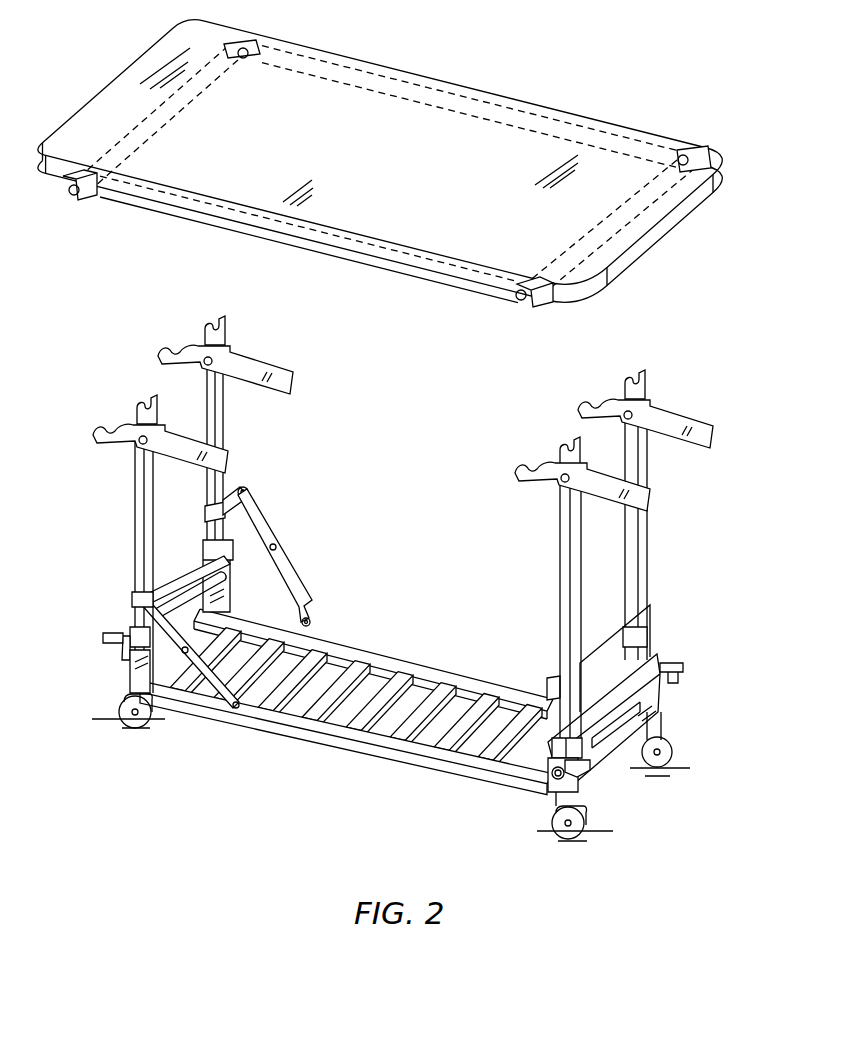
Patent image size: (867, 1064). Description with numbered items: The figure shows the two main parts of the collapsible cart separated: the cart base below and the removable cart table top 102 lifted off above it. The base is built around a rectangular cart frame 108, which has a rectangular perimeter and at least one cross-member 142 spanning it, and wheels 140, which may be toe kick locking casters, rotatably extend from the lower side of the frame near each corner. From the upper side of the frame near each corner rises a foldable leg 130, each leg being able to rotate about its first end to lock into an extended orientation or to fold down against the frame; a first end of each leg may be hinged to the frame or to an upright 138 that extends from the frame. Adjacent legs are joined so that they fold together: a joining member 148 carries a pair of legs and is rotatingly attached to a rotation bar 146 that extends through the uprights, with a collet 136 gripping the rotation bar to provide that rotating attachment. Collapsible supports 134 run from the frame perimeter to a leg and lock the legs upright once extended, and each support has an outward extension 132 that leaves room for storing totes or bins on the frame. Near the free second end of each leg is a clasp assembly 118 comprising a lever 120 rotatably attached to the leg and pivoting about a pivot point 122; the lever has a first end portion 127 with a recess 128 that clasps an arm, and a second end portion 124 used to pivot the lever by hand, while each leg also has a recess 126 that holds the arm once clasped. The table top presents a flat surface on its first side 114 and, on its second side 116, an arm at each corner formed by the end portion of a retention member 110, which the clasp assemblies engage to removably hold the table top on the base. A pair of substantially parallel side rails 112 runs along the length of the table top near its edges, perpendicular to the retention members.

The cart table top 102 is at (120, 118).
The rectangular cart frame 108 is at (350, 706).
The retention member 110 is at (75, 195).
The side rail 112 is at (175, 210).
The first side 114 is at (722, 152).
The second side 116 is at (693, 212).
The clasp assembly 118 is at (656, 395).
The lever 120 is at (575, 625).
The pivot point 122 is at (558, 486).
The second end portion 124 is at (208, 448).
The recess 126 is at (205, 340).
The first end portion 127 is at (158, 349).
The recess 128 is at (107, 427).
The foldable leg 130 is at (145, 529).
The outward extension 132 is at (248, 492).
The collapsible support 134 is at (290, 560).
The collet 136 is at (115, 650).
The upright 138 is at (132, 674).
The wheel 140 is at (122, 705).
The cross-member 142 is at (413, 718).
The rotation bar 146 is at (617, 712).
The joining member 148 is at (610, 695).